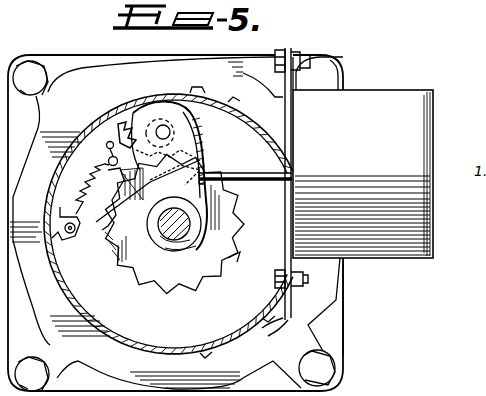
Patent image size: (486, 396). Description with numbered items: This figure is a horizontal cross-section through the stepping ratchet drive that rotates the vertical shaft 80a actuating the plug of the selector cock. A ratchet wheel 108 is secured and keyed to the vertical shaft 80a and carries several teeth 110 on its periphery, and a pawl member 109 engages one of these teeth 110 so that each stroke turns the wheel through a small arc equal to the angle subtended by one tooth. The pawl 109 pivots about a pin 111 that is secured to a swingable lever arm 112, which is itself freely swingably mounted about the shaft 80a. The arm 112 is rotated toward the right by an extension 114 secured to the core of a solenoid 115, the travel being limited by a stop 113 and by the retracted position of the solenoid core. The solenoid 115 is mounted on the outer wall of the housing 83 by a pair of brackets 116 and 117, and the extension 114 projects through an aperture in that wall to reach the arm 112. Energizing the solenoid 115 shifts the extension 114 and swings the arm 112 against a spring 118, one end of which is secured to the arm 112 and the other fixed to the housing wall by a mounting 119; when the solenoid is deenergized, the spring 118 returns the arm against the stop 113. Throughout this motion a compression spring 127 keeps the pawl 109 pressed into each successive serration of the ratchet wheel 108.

The housing 83 is at (160, 351).
The ratchet wheel 108 is at (183, 293).
The teeth 110 is at (233, 262).
The vertical shaft 80a is at (156, 251).
The pawl member 109 is at (207, 147).
The pin 111 is at (163, 125).
The stop 113 is at (106, 142).
The compression spring 127 is at (121, 124).
The spring 118 is at (82, 185).
The mounting 119 is at (51, 240).
The swingable lever arm 112 is at (104, 228).
The extension 114 is at (256, 173).
The solenoid 115 is at (372, 99).
The bracket 116 is at (293, 50).
The bracket 117 is at (309, 304).